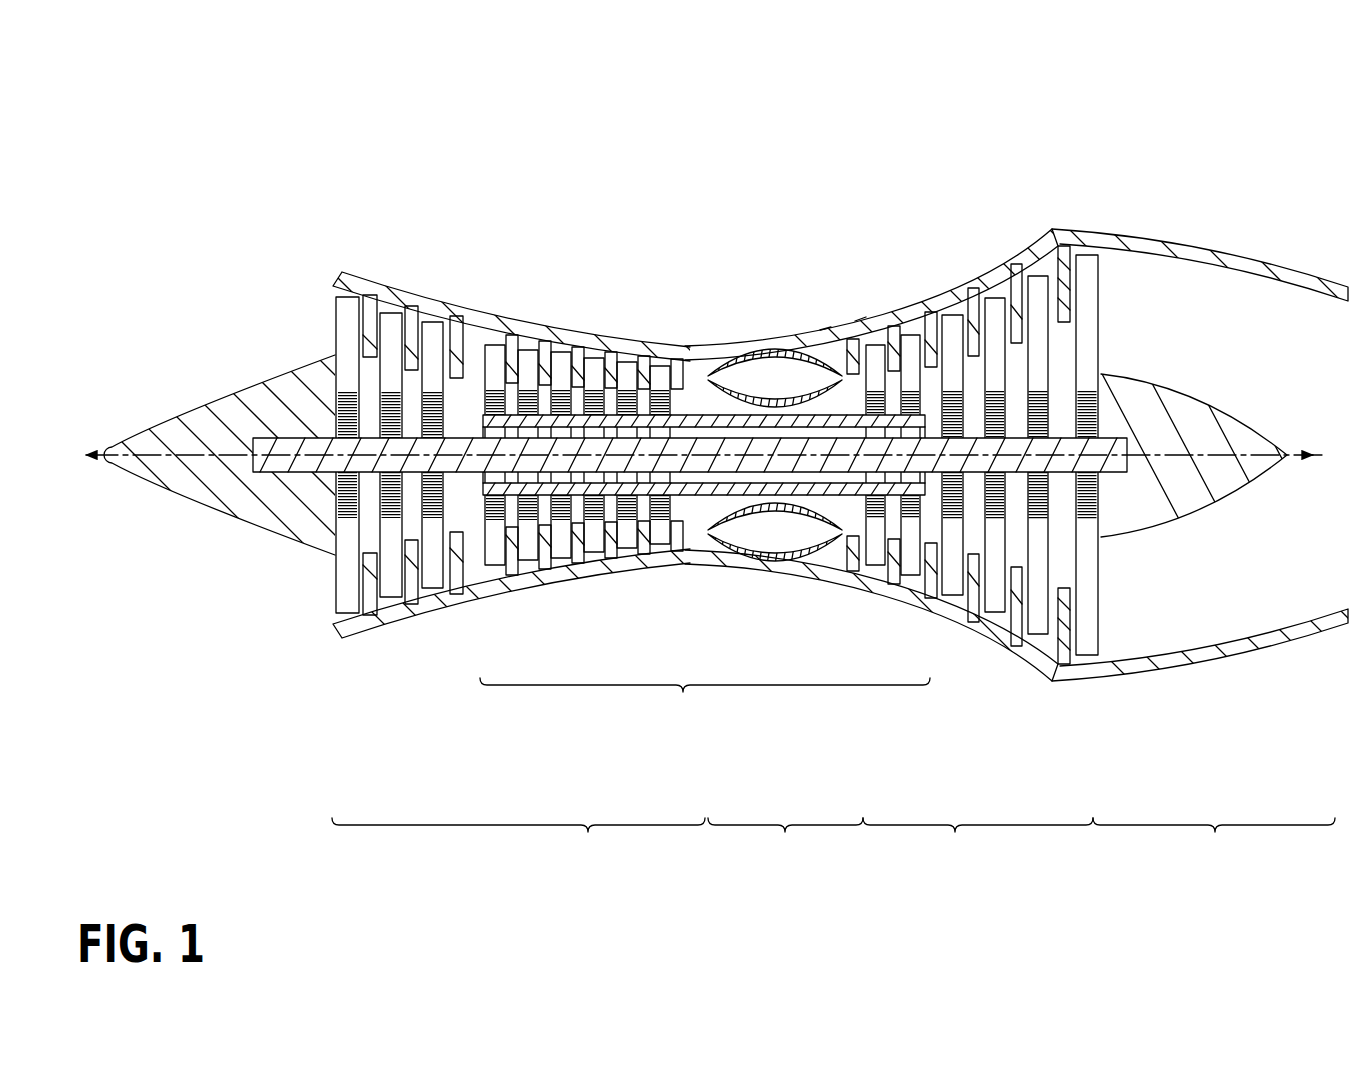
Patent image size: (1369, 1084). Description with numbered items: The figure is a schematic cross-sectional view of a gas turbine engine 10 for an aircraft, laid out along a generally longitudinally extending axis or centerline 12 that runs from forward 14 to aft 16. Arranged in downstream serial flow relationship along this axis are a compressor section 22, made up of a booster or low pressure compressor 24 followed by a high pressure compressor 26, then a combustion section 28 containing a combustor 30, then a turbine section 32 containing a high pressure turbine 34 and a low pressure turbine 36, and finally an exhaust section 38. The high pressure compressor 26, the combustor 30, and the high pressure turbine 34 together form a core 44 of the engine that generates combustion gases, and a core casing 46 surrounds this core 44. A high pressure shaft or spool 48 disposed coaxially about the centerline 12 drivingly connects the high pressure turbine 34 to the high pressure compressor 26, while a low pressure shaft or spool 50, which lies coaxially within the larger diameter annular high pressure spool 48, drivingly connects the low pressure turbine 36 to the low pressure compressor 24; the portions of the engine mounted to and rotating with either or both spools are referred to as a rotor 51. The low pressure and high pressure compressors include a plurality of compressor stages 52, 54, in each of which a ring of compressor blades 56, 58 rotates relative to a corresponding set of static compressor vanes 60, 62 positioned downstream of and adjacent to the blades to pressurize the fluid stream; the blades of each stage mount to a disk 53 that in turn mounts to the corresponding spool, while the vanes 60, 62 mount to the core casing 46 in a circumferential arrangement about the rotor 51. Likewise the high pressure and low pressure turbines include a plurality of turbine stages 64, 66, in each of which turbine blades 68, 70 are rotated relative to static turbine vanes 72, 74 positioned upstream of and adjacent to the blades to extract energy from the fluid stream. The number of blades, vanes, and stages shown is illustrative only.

The gas turbine engine 10 is at (130, 65).
The centerline 12 is at (167, 453).
The forward 14 is at (681, 456).
The aft 16 is at (1335, 456).
The compressor section 22 is at (565, 521).
The low pressure compressor 24 is at (565, 422).
The high pressure compressor 26 is at (587, 438).
The combustion section 28 is at (945, 534).
The combustor 30 is at (830, 353).
The turbine section 32 is at (1012, 496).
The high pressure turbine 34 is at (873, 423).
The low pressure turbine 36 is at (1065, 422).
The exhaust section 38 is at (1204, 534).
The core 44 is at (688, 474).
The core casing 46 is at (750, 330).
The HP spool 48 is at (688, 354).
The LP spool 50 is at (482, 420).
The rotor 51 is at (617, 426).
The compressor stage 52 is at (398, 394).
The disk 53 is at (996, 406).
The compressor stage 54 is at (497, 300).
The compressor blades 56 is at (350, 305).
The compressor blades 58 is at (498, 350).
The static compressor vanes 60 is at (370, 320).
The static compressor vanes 62 is at (512, 348).
The turbine stage 64 is at (879, 300).
The turbine stage 66 is at (1011, 236).
The turbine blades 68 is at (895, 345).
The turbine blades 70 is at (1073, 413).
The static turbine vanes 72 is at (877, 340).
The static turbine vanes 74 is at (1018, 250).